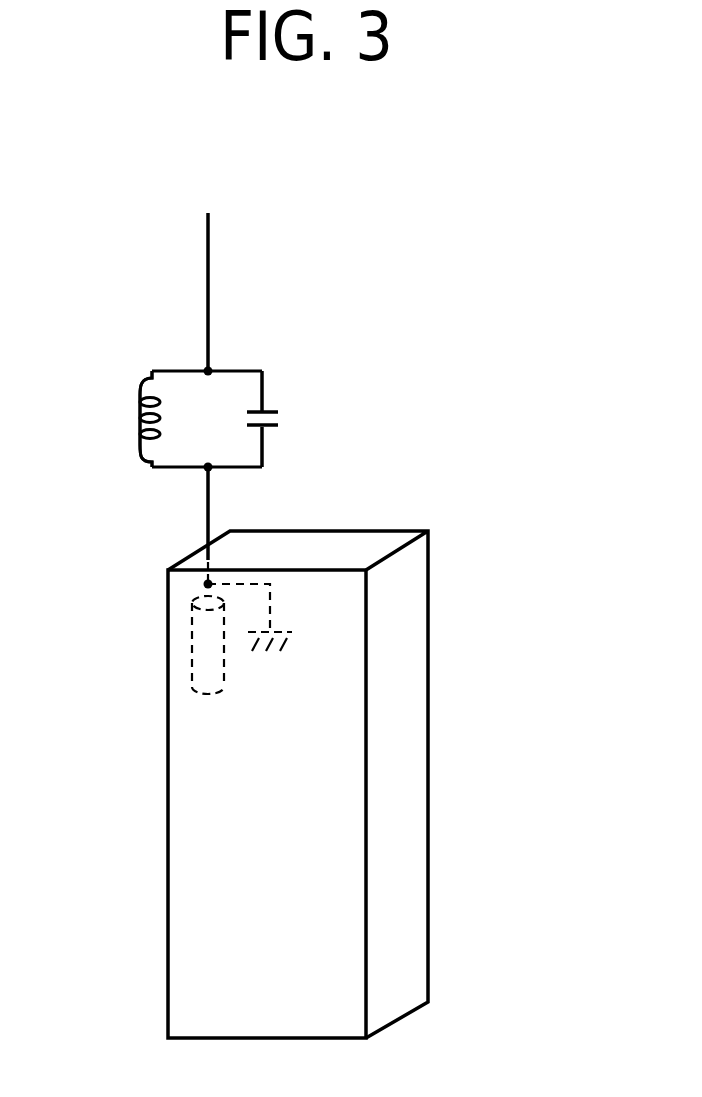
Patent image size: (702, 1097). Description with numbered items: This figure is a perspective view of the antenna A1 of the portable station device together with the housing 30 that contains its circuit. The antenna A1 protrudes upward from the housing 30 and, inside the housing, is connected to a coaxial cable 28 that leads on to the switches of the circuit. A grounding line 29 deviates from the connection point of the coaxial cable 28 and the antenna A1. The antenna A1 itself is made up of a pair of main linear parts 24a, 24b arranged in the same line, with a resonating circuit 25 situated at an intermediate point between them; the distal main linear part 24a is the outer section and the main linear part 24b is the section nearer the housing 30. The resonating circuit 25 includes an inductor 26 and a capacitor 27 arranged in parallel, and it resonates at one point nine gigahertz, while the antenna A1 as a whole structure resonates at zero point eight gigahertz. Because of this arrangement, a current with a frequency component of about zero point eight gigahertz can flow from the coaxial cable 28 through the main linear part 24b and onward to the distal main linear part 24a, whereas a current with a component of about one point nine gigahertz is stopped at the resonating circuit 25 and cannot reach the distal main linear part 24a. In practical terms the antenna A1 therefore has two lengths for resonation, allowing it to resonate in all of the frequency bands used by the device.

The antenna A1 is at (236, 309).
The main linear part 24a is at (207, 311).
The main linear part 24b is at (207, 508).
The resonating circuit 25 is at (254, 370).
The inductor 26 is at (140, 422).
The capacitor 27 is at (278, 405).
The coaxial cable 28 is at (175, 640).
The grounding line 29 is at (272, 588).
The housing 30 is at (452, 752).